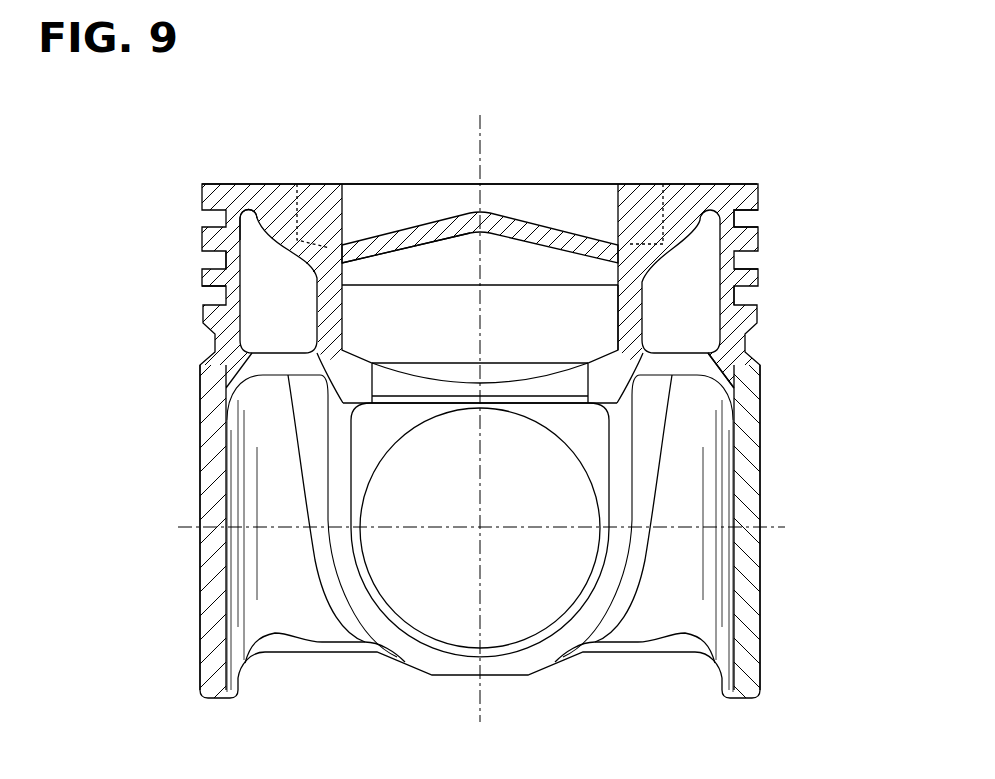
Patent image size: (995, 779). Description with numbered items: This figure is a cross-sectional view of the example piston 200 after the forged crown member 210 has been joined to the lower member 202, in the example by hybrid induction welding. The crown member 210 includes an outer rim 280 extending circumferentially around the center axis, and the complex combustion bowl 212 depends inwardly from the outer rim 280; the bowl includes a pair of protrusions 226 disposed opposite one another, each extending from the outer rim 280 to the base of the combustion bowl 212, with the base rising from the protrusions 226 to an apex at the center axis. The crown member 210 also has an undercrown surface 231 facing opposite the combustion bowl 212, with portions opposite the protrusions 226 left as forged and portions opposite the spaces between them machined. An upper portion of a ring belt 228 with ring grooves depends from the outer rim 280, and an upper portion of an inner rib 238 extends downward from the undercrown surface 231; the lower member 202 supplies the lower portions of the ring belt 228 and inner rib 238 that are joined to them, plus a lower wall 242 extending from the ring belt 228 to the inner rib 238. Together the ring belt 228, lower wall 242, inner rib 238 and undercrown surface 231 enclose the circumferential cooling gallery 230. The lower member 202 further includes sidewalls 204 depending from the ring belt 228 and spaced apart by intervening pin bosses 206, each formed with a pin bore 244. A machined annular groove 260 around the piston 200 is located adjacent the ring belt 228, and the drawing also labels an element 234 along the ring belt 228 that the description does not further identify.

The piston 200 is at (762, 165).
The lower member 202 is at (200, 469).
The sidewalls 204 is at (762, 472).
The pin boss 206 is at (608, 612).
The crown member 210 is at (201, 212).
The combustion bowl 212 is at (528, 214).
The protrusion 226 is at (315, 195).
The ring belt 228 is at (760, 243).
The cooling gallery 230 is at (296, 317).
The undercrown surface 231 is at (236, 257).
The ring land 234 is at (207, 292).
The inner rib 238 is at (630, 330).
The lower wall 242 is at (700, 366).
The pin bore 244 is at (546, 579).
The annular groove 260 is at (240, 221).
The outer rim 280 is at (262, 184).